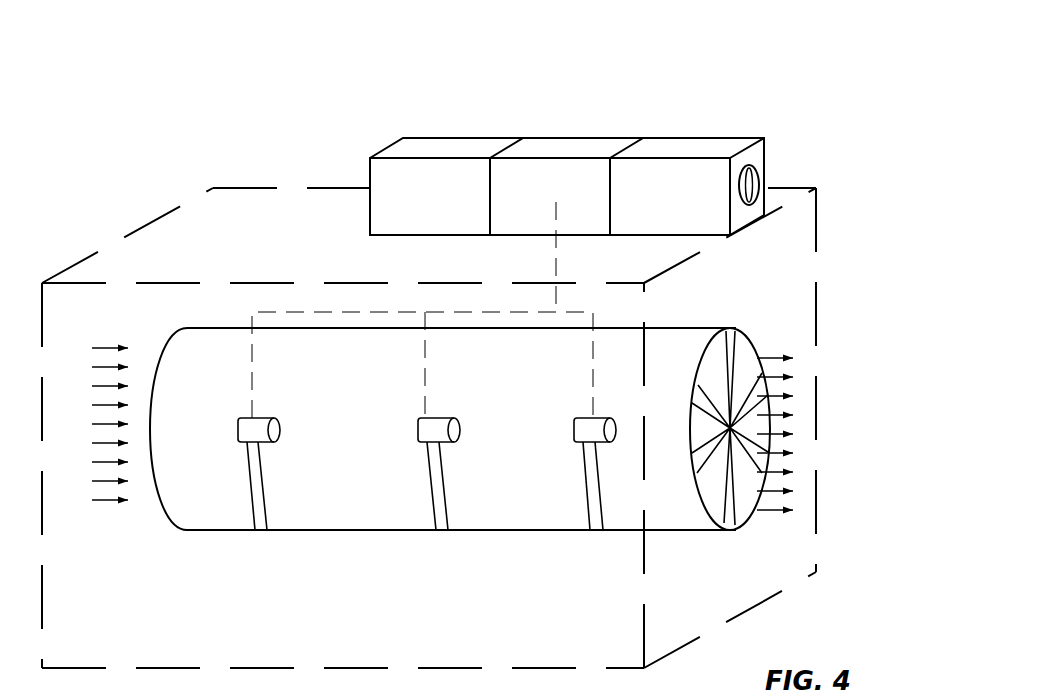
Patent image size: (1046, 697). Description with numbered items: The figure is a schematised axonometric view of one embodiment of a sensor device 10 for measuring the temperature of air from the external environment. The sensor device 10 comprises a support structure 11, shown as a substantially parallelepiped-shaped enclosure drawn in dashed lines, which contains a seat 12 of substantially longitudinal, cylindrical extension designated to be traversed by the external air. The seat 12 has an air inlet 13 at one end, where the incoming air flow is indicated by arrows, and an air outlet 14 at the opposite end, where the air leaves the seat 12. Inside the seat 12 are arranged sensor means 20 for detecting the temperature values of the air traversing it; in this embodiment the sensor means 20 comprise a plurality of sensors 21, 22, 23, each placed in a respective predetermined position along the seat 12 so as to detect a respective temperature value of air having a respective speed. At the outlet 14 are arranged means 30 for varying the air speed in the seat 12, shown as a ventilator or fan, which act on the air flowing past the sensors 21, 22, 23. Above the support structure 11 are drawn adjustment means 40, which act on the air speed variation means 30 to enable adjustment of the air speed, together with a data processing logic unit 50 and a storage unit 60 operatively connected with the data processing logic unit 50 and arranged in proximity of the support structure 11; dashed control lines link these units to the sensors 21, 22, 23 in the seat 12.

The sensor device 10 is at (826, 78).
The support structure 11 is at (265, 152).
The seat 12 is at (356, 414).
The air inlet 13 is at (403, 358).
The air outlet 14 is at (756, 348).
The sensor means 20 is at (228, 471).
The temperature sensor 21 is at (265, 432).
The temperature sensor 22 is at (447, 433).
The temperature sensor 23 is at (602, 433).
The air speed variation means 30 is at (737, 523).
The adjustment means 40 is at (695, 137).
The data processing logic unit 50 is at (578, 143).
The storage unit 60 is at (457, 143).